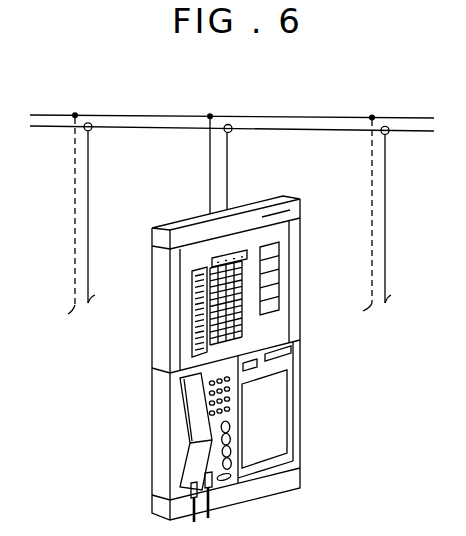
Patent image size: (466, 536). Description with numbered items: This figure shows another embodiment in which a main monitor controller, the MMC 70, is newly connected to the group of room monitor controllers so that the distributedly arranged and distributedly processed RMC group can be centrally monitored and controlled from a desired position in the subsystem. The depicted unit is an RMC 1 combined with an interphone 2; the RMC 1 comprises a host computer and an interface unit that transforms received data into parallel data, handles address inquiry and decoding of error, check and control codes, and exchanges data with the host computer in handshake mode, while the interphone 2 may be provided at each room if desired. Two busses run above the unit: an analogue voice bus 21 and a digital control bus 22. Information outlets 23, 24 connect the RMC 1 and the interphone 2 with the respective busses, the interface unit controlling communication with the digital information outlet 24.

The RMC 1 is at (303, 372).
The interphone 2 is at (156, 403).
The MMC (main monitor controller) 70 is at (304, 258).
The analogue (voice) bus 21 is at (300, 116).
The digital (control) bus 22 is at (330, 128).
The information outlet 23 is at (210, 114).
The information outlet 24 is at (233, 115).